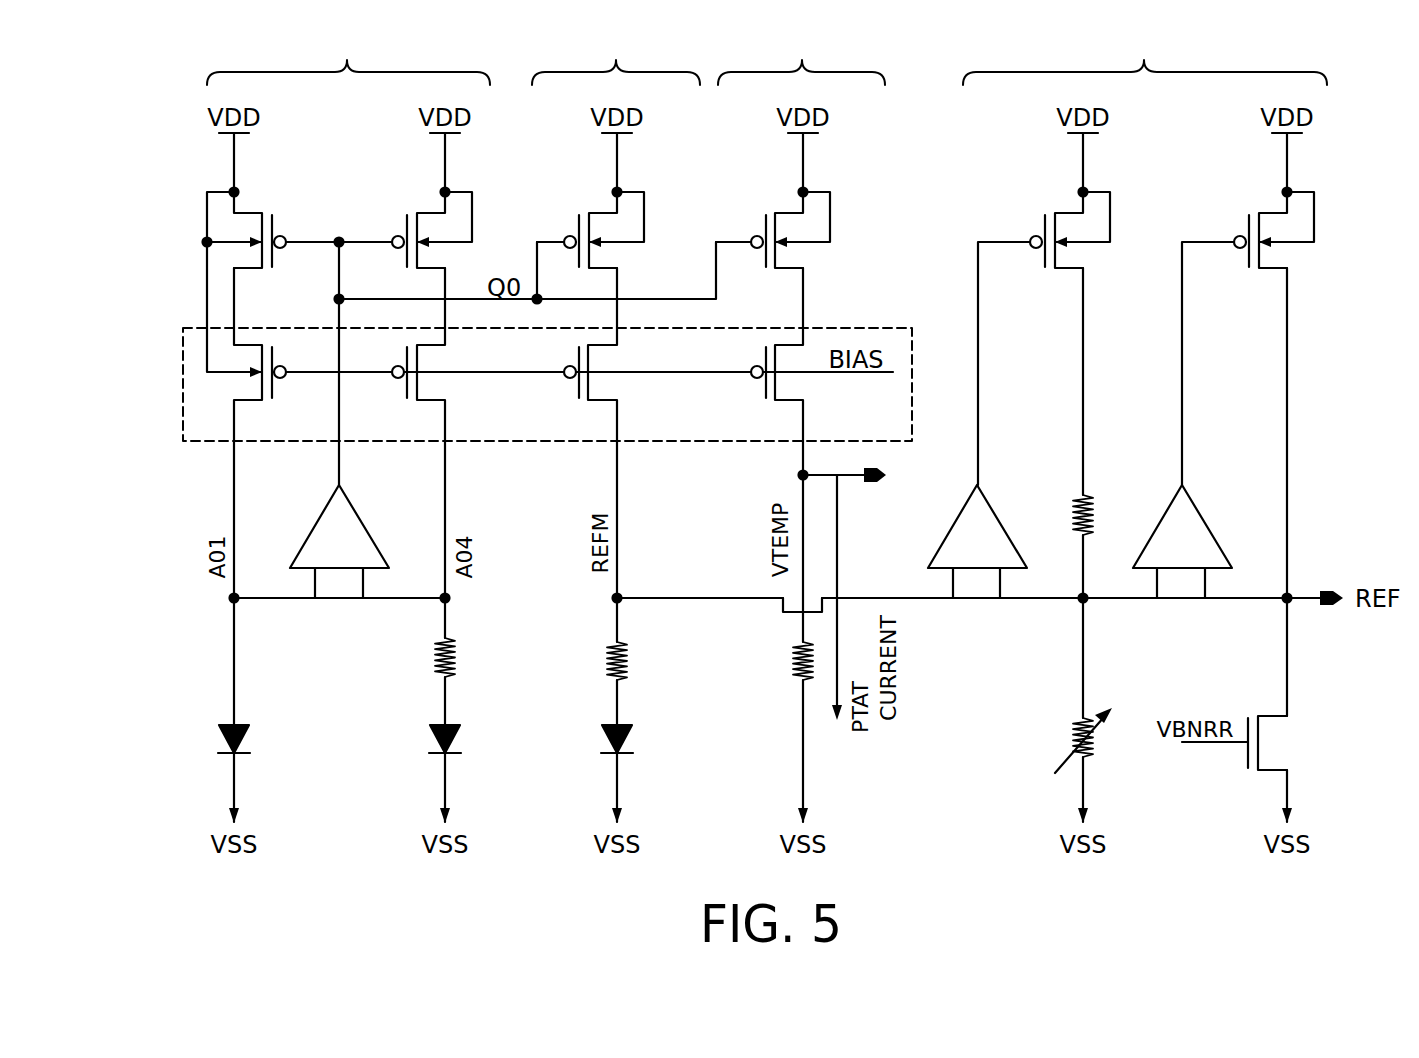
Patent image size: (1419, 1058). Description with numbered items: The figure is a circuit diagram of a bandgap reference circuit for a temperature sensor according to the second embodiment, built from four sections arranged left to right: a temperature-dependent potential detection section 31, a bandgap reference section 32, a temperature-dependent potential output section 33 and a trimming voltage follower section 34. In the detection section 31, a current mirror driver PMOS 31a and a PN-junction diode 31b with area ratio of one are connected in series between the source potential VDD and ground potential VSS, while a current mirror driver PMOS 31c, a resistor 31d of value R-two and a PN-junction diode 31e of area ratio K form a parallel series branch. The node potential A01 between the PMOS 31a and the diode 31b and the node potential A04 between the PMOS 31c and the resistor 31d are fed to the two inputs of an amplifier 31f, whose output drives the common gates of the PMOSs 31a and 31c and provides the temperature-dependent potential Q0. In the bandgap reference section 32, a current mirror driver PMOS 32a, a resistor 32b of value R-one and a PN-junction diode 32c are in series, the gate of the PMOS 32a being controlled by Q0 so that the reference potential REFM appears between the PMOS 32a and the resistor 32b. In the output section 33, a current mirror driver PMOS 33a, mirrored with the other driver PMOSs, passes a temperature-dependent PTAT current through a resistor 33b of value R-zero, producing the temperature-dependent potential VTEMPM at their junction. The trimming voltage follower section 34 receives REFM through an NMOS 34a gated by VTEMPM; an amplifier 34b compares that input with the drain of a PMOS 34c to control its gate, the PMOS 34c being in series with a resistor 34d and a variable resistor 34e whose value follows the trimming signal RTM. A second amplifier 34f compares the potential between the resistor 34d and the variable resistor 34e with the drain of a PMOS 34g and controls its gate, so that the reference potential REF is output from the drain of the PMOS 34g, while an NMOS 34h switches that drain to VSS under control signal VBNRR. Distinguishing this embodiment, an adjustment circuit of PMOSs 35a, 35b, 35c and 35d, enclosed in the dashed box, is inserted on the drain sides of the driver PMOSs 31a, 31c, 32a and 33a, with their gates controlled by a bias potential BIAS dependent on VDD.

The temperature-dependent potential detection section 31 is at (341, 417).
The bandgap reference section 32 is at (624, 417).
The temperature-dependent potential output section 33 is at (782, 361).
The trimming voltage follower section 34 is at (1035, 398).
The current mirror driver PMOS 31a is at (247, 212).
The PN-junction diode 31b is at (223, 724).
The current mirror driver PMOS 31c is at (430, 212).
The resistor 31d is at (433, 642).
The PN-junction diode 31e is at (455, 756).
The amplifier 31f is at (365, 513).
The current mirror driver PMOS 32a is at (602, 212).
The resistor 32b is at (605, 644).
The PN-junction diode 32c is at (627, 756).
The current mirror driver PMOS 33a is at (788, 212).
The resistor 33b is at (791, 644).
The NMOS 34a is at (788, 606).
The amplifier 34b is at (1001, 514).
The PMOS 34c is at (1070, 212).
The resistor 34d is at (1086, 496).
The variable resistor 34e is at (1087, 713).
The amplifier 34f is at (1206, 514).
The PMOS 34g is at (1276, 212).
The NMOS 34h is at (1268, 745).
The PMOS 35a is at (273, 388).
The PMOS 35b is at (419, 385).
The PMOS 35c is at (590, 385).
The PMOS 35d is at (778, 385).